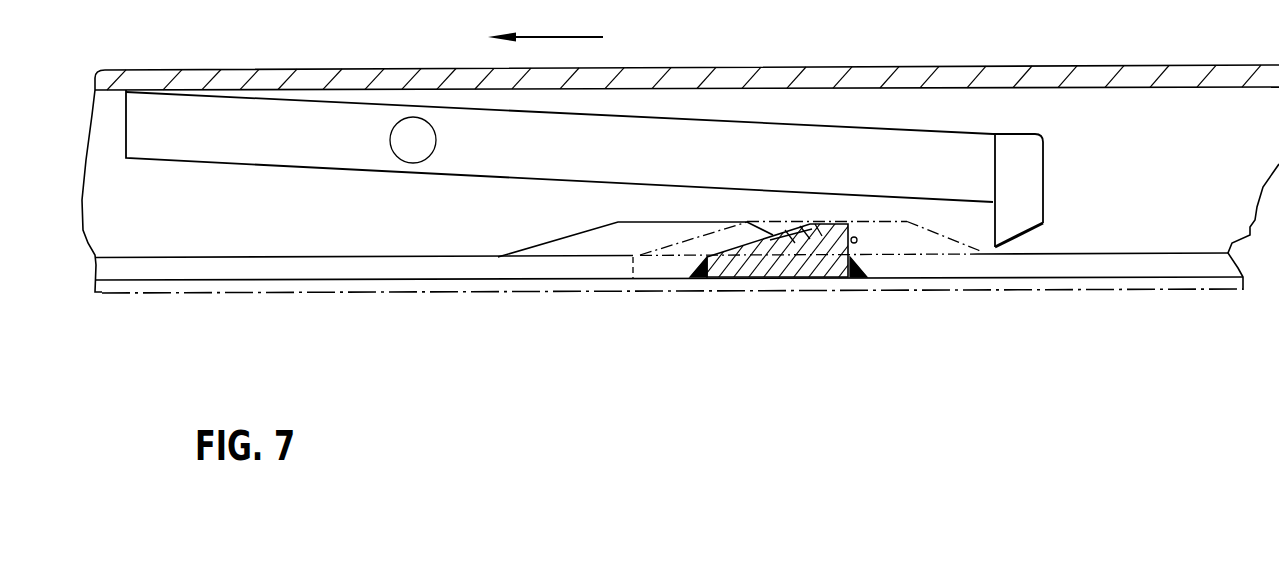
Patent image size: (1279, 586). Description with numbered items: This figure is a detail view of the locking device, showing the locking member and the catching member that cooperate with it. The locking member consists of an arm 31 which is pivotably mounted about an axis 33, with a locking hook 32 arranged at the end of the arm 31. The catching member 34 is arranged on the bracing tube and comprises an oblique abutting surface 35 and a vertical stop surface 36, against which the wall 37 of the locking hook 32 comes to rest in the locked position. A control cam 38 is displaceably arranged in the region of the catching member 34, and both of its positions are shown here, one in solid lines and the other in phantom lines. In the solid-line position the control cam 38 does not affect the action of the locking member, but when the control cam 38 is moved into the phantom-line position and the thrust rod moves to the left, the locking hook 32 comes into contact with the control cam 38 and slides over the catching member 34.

The arm 31 is at (588, 170).
The locking hook 32 is at (1020, 168).
The axis 33 is at (402, 152).
The catching member 34 is at (828, 252).
The oblique abutting surface 35 is at (760, 242).
The vertical stop surface 36 is at (857, 242).
The wall 37 is at (1005, 213).
The control cam 38 is at (618, 247).